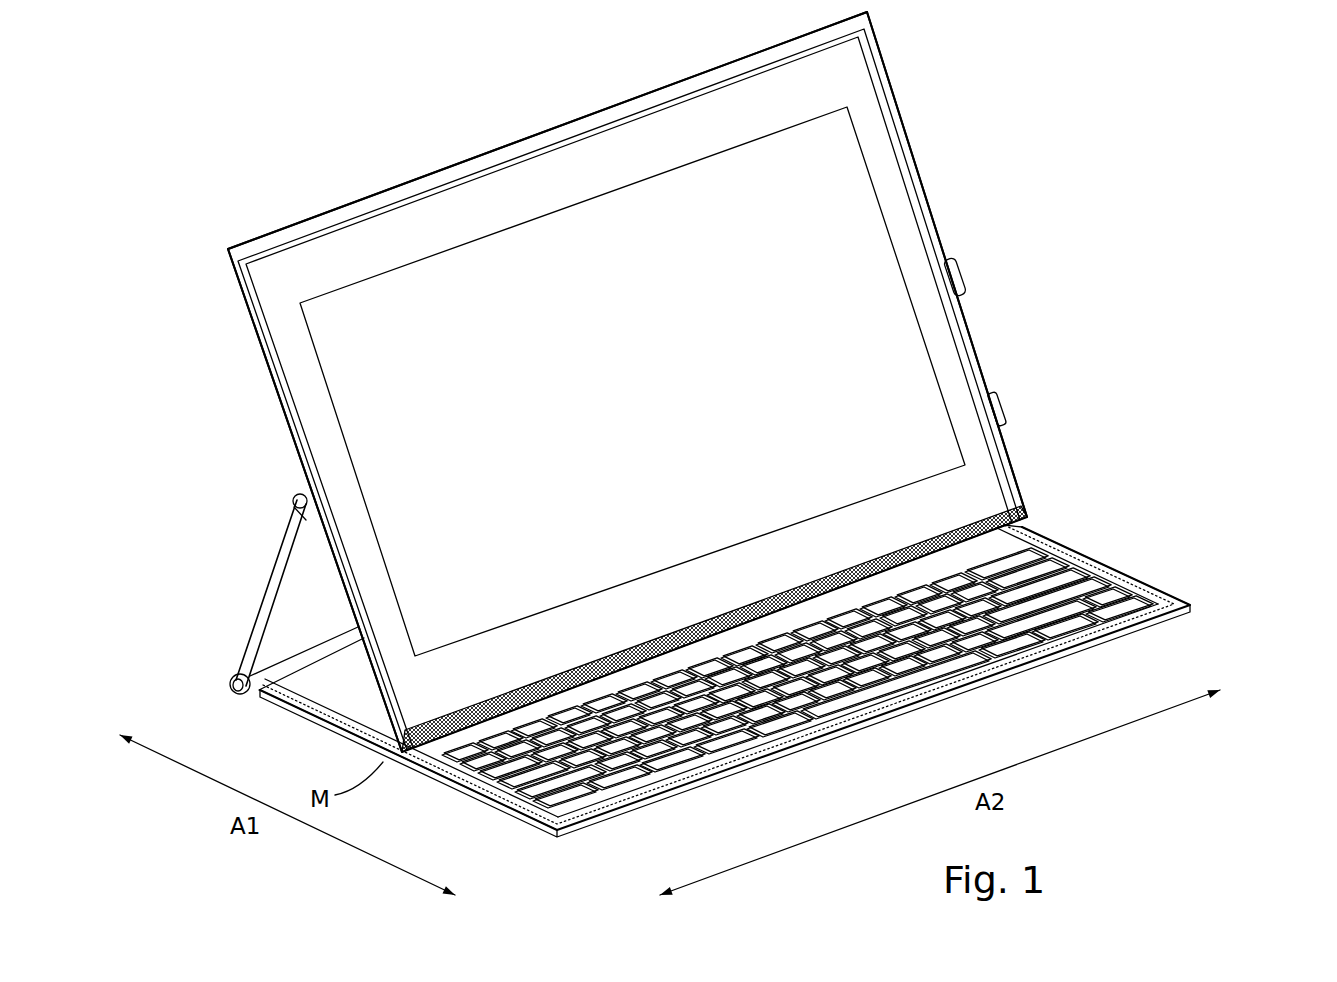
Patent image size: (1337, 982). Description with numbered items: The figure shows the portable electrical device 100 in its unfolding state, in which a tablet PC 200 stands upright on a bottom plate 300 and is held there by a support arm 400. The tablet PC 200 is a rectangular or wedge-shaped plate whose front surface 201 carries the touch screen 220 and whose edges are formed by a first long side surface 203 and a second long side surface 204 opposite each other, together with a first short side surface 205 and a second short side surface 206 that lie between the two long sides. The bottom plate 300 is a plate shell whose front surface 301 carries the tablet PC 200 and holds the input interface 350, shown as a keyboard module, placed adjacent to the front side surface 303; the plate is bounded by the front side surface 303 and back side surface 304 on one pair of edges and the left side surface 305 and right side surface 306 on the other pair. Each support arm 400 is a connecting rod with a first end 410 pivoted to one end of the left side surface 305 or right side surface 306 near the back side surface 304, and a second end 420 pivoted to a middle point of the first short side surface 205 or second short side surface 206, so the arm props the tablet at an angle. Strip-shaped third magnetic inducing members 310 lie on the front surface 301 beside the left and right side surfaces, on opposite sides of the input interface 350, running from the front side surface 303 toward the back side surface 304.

The portable electrical device 100 is at (172, 66).
The tablet PC 200 is at (915, 96).
The front surface 201 is at (905, 215).
The first long side surface 203 is at (767, 623).
The second long side surface 204 is at (515, 149).
The first short side surface 205 is at (262, 357).
The second short side surface 206 is at (1010, 455).
The touch screen 220 is at (920, 398).
The bottom plate 300 is at (1205, 570).
The front surface 301 is at (1017, 538).
The front side surface 303 is at (675, 795).
The back side surface 304 is at (327, 633).
The left side surface 305 is at (270, 700).
The right side surface 306 is at (1127, 568).
The third magnetic inducing member 310 is at (1090, 552).
The input interface 350 is at (985, 672).
The support arm 400 is at (232, 592).
The first end 410 is at (238, 678).
The second end 420 is at (298, 502).